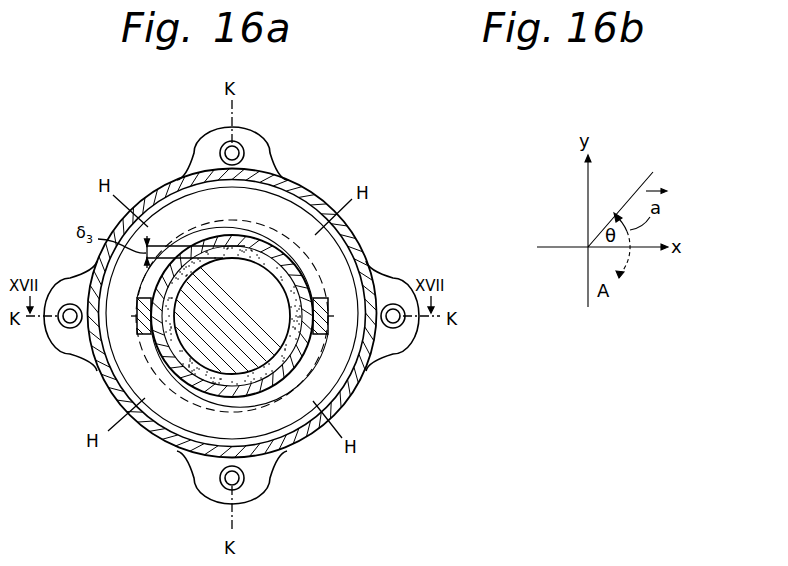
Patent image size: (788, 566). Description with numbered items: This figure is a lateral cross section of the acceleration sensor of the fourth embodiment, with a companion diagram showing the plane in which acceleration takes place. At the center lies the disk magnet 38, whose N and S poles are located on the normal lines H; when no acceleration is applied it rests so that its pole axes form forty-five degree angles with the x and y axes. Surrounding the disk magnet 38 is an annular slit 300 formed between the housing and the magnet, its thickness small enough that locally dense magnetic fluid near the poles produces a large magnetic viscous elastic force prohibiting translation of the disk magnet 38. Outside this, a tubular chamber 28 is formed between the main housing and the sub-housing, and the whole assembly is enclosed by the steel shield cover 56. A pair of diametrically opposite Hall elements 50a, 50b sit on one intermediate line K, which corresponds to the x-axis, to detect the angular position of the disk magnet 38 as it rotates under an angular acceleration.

The tubular chamber 28 is at (306, 296).
The disk magnet 38 is at (144, 398).
The shield cover 56 is at (321, 203).
The annular slit 300 is at (260, 246).
The Hall element 50a is at (328, 326).
The Hall element 50b is at (137, 322).